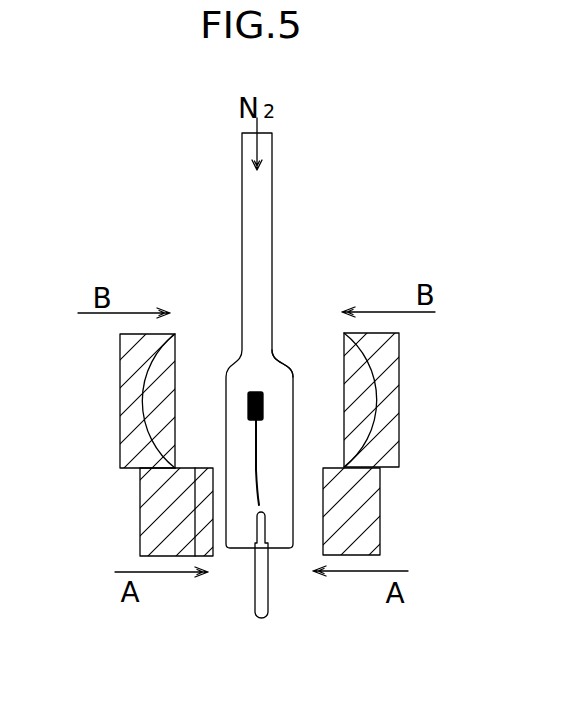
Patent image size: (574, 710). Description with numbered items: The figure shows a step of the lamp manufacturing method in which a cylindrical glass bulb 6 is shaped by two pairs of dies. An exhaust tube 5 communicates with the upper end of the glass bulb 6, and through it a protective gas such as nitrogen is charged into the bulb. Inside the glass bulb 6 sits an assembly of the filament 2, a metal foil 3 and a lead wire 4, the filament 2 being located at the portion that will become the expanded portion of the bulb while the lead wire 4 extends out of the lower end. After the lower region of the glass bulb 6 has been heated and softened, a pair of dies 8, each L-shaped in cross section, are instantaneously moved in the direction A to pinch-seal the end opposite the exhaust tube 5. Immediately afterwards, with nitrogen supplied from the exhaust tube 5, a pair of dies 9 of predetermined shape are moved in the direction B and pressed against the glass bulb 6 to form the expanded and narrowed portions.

The filament 2 is at (257, 455).
The metal foil 3 is at (259, 500).
The lead wire 4 is at (265, 587).
The exhaust tube 5 is at (265, 223).
The glass bulb 6 is at (278, 365).
The die 8 is at (147, 525).
The die 9 is at (125, 382).